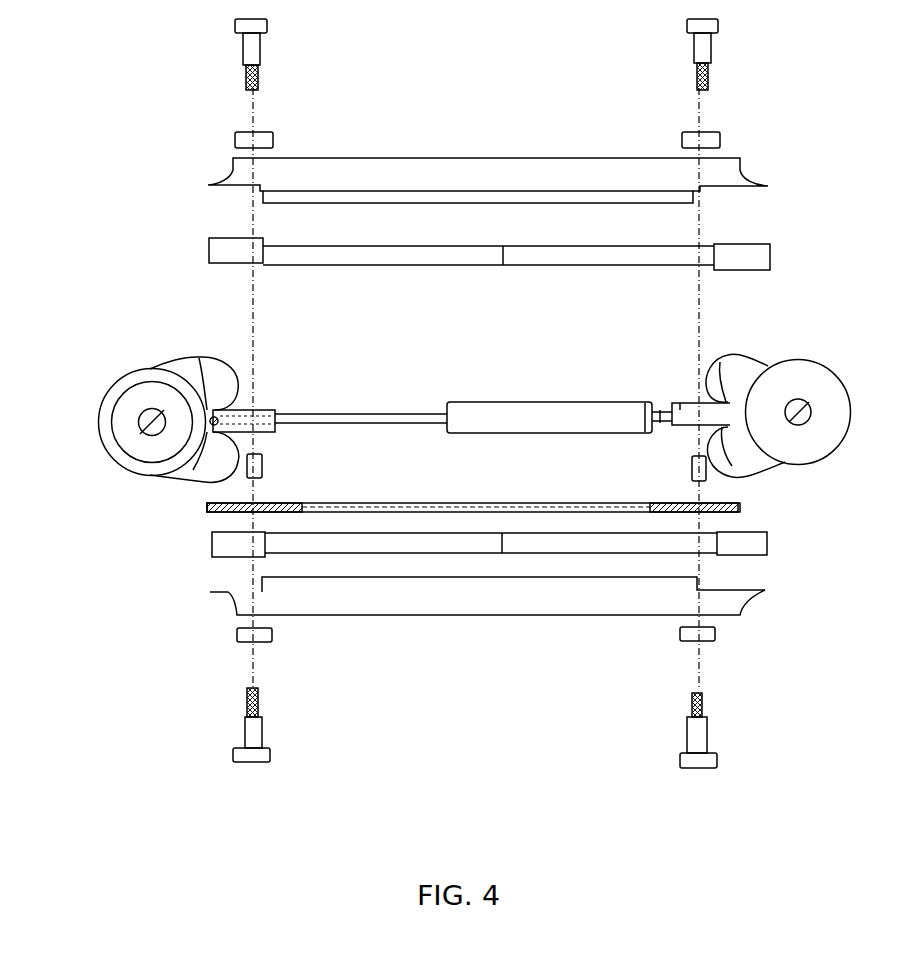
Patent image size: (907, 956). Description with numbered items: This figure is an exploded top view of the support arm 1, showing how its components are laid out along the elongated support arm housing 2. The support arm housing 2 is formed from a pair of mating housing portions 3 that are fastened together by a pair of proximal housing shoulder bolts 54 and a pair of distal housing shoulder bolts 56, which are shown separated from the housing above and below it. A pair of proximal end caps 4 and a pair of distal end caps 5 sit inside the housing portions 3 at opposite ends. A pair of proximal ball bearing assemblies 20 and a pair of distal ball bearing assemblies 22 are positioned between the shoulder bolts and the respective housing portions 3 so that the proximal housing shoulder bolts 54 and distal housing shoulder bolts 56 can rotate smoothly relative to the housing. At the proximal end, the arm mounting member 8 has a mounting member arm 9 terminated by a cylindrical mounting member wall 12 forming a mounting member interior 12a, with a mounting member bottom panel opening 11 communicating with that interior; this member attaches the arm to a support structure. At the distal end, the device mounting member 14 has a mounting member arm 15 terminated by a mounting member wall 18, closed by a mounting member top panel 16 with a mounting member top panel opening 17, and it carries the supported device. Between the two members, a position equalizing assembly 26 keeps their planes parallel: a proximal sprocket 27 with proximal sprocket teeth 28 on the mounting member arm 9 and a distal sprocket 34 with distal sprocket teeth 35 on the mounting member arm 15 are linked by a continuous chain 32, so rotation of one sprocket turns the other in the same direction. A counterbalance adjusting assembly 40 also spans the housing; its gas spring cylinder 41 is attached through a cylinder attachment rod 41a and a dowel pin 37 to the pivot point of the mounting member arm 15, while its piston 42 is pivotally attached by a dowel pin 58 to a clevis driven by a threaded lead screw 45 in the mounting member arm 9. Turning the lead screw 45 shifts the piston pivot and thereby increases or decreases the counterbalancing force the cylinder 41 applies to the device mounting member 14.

The support arm 1 is at (135, 112).
The support arm housing 2 is at (537, 148).
The housing portions 3 is at (440, 155).
The proximal end caps 4 is at (215, 250).
The distal end caps 5 is at (762, 256).
The arm mounting member 8 is at (152, 365).
The mounting member arm 9 is at (262, 410).
The mounting member bottom panel opening 11 is at (148, 422).
The mounting member wall 12 is at (120, 458).
The mounting member interior 12a is at (133, 398).
The device mounting member 14 is at (832, 360).
The mounting member arm 15 is at (682, 408).
The mounting member top panel 16 is at (820, 436).
The mounting member top panel opening 17 is at (804, 412).
The mounting member wall 18 is at (830, 457).
The proximal ball bearing assemblies 20 is at (273, 133).
The distal ball bearing assemblies 22 is at (715, 133).
The position equalizing assembly 26 is at (385, 482).
The proximal sprocket 27 is at (270, 500).
The proximal sprocket teeth 28 is at (207, 508).
The chain 32 is at (556, 502).
The distal sprocket 34 is at (672, 502).
The distal sprocket teeth 35 is at (738, 506).
The dowel pin 37 is at (708, 476).
The counterbalance adjusting assembly 40 is at (405, 378).
The gas spring cylinder 41 is at (537, 406).
The cylinder attachment rod 41a is at (660, 420).
The piston 42 is at (352, 412).
The lead screw 45 is at (252, 360).
The proximal housing shoulder bolts 54 is at (258, 46).
The distal housing shoulder bolts 56 is at (694, 46).
The dowel pin 58 is at (262, 466).